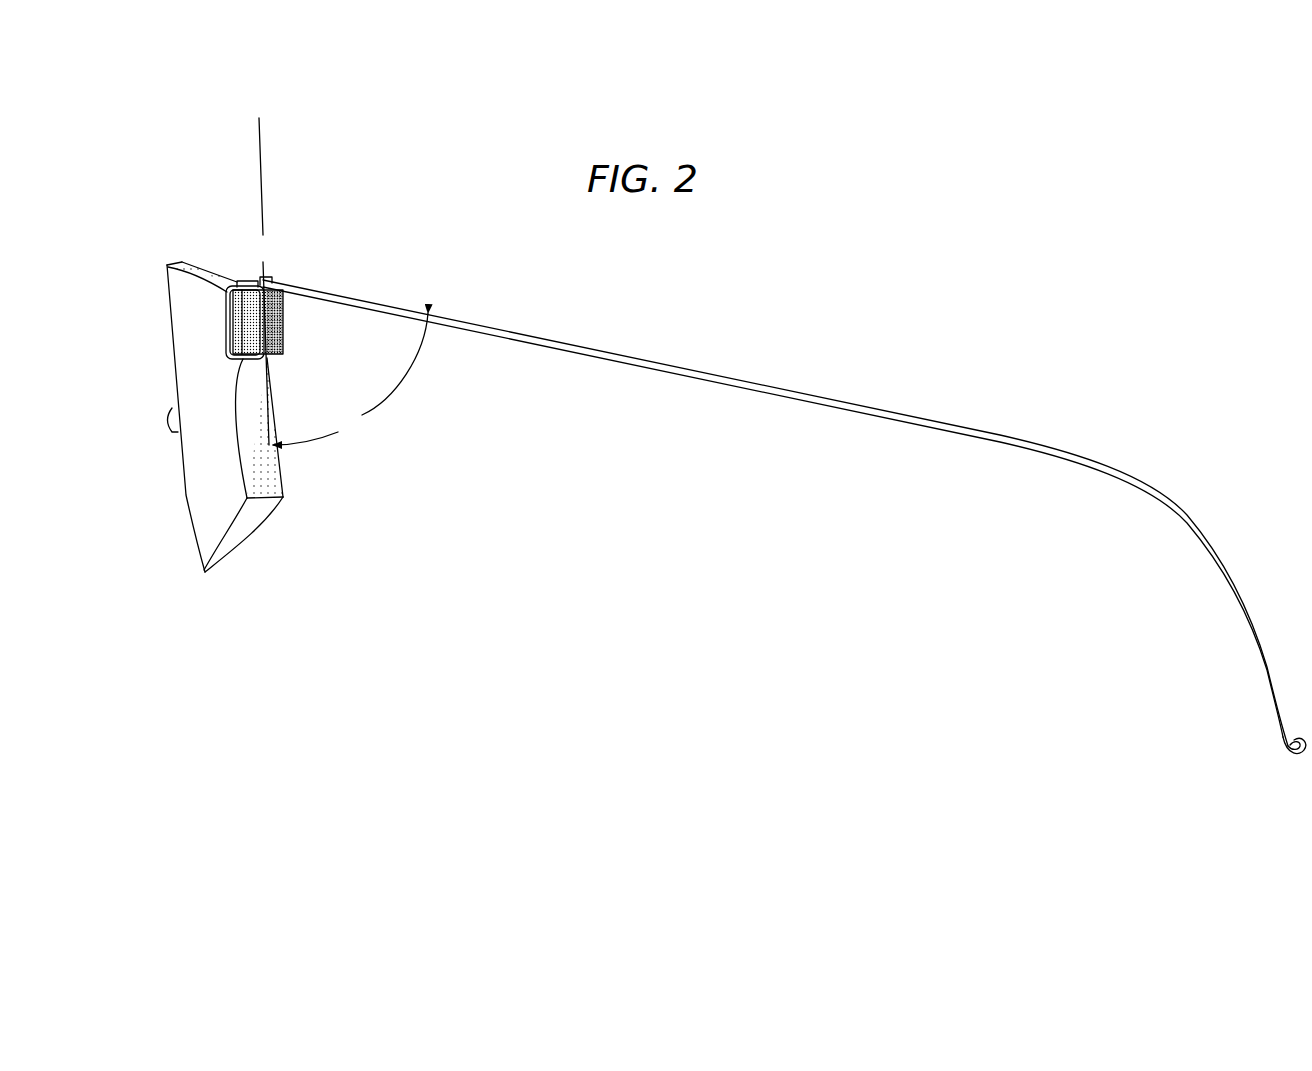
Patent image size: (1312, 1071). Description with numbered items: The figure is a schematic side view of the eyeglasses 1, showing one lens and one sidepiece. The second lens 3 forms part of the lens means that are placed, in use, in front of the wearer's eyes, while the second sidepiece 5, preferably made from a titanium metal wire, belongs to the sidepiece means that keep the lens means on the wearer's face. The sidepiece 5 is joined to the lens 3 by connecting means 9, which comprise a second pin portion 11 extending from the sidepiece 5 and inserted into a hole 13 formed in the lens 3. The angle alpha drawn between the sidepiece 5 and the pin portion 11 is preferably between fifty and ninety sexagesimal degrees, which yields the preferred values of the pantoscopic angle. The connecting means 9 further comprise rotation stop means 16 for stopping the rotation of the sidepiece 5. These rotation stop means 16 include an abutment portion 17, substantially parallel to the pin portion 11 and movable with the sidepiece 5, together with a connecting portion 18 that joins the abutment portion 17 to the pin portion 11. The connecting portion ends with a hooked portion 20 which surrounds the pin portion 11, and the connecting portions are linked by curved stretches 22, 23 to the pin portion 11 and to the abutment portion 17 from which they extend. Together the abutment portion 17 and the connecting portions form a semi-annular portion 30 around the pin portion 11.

The eyeglasses 1 is at (918, 287).
The second lens 3 is at (168, 258).
The second sidepiece 5 is at (730, 387).
The connecting means 9 is at (217, 347).
The second pin portion 11 is at (267, 315).
The hole 13 is at (285, 340).
The rotation stop means 16 is at (233, 273).
The abutment portion 17 is at (227, 318).
The connecting portion 18 is at (236, 375).
The hooked portion 20 is at (247, 277).
The curved stretch 22 is at (223, 357).
The curved stretch 23 is at (227, 292).
The semi-annular portion 30 is at (255, 272).